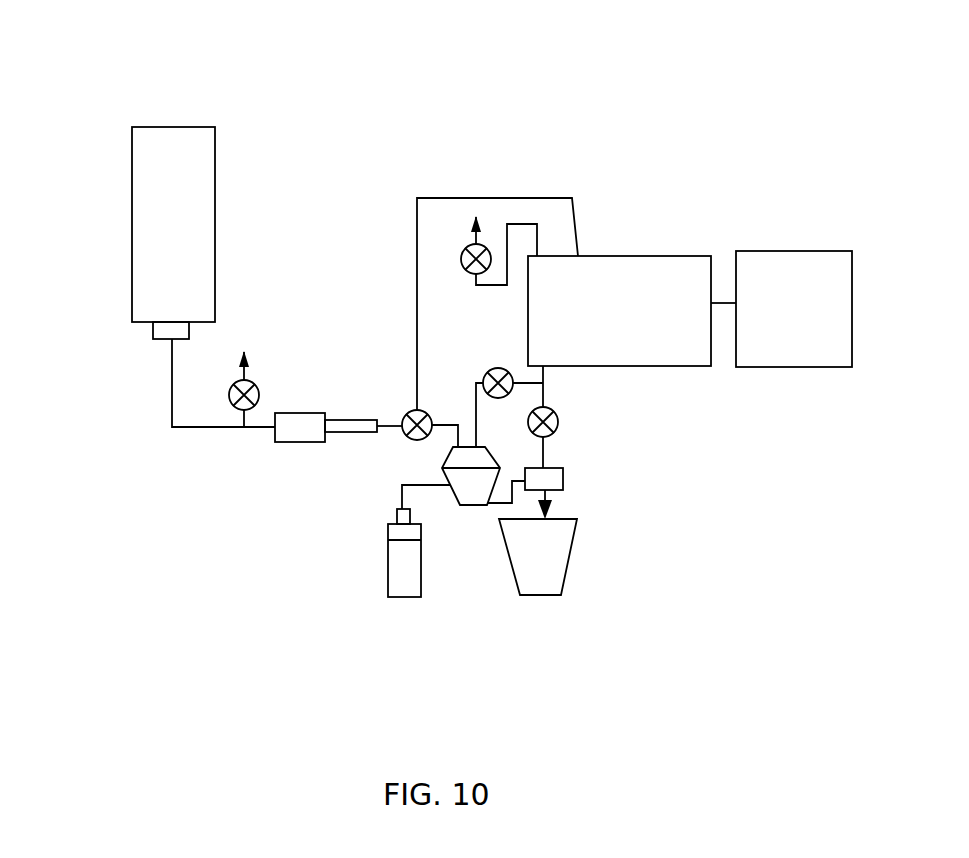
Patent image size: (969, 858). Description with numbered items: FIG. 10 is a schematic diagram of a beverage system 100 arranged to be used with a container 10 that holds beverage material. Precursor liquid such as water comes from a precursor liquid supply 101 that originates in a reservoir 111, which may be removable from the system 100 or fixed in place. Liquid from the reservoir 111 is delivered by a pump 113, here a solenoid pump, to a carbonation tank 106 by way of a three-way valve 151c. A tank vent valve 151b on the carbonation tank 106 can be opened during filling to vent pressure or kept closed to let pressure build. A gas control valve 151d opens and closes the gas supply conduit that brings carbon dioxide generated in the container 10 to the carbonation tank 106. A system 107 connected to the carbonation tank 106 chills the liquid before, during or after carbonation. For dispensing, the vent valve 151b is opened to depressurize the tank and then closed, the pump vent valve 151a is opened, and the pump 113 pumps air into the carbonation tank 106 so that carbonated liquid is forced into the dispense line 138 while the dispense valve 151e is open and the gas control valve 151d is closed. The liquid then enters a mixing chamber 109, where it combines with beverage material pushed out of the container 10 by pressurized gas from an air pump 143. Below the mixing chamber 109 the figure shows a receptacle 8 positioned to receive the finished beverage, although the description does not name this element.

The beverage system 100 is at (108, 97).
The precursor liquid supply 101 is at (97, 347).
The container 10 is at (470, 593).
The reservoir 111 is at (206, 184).
The pump vent valve 151a is at (259, 388).
The tank vent valve 151b is at (465, 250).
The three-way valve 151c is at (409, 413).
The gas control valve 151d is at (498, 368).
The dispense valve 151e is at (559, 421).
The pump 113 is at (320, 458).
The carbonation tank 106 is at (651, 272).
The cooling system 107 is at (808, 254).
The dispense line 138 is at (562, 477).
The mixing chamber 109 is at (551, 505).
The receptacle 8 is at (608, 580).
The air pump 143 is at (370, 582).